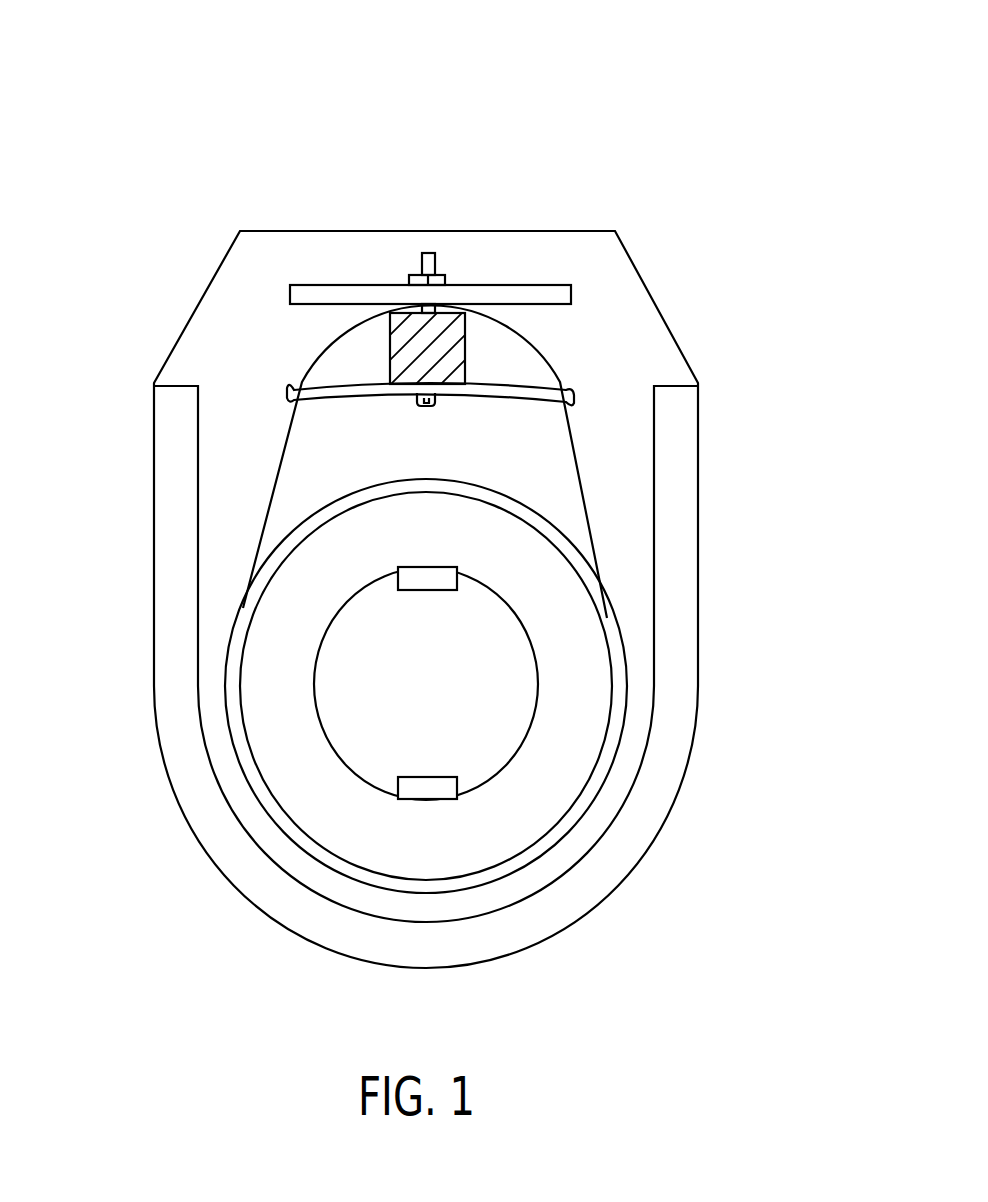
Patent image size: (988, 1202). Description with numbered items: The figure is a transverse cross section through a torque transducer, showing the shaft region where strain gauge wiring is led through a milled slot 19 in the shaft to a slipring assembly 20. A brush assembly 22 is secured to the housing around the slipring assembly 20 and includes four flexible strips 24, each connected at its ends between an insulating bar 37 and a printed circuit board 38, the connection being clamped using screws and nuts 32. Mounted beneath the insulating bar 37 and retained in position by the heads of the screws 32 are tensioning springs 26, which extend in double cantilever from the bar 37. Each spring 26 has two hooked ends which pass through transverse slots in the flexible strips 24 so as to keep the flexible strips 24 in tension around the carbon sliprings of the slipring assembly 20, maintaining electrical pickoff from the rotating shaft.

The milled slot 19 is at (455, 793).
The slipring assembly 20 is at (573, 672).
The brush assembly 22 is at (262, 486).
The flexible strip 24 is at (582, 498).
The tensioning spring 26 is at (523, 386).
The screw 32 is at (452, 271).
The insulating bar 37 is at (447, 347).
The printed circuit board 38 is at (330, 277).